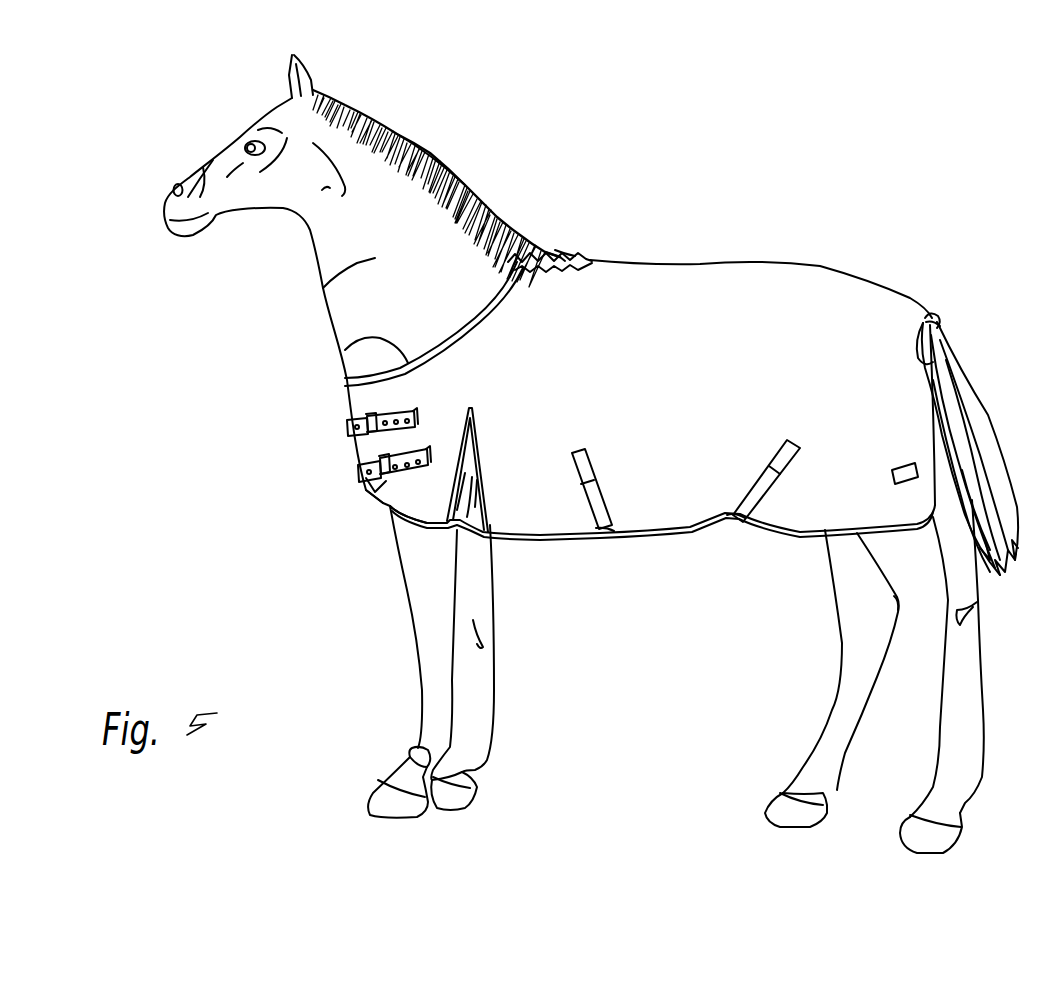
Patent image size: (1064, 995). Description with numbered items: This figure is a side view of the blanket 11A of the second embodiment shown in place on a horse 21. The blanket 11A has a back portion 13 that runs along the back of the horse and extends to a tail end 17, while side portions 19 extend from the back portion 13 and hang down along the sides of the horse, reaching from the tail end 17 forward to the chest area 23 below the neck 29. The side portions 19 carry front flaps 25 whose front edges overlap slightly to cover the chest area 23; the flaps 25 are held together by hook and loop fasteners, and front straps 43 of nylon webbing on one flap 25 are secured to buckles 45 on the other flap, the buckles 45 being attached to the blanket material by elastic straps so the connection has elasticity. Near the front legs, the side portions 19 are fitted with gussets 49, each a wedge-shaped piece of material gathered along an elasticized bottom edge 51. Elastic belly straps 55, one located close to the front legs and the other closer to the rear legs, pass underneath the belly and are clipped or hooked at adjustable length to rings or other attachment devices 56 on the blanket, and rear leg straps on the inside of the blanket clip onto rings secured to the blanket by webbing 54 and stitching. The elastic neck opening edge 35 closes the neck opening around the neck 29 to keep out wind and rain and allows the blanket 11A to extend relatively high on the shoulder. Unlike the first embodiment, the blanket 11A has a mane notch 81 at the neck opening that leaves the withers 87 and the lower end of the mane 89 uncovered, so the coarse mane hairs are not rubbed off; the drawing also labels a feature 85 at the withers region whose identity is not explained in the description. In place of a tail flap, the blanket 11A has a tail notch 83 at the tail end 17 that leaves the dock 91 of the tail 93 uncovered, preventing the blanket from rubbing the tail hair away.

The blanket 11A is at (611, 370).
The back portion 13 is at (748, 258).
The tail end 17 is at (923, 302).
The side portions 19 is at (793, 500).
The horse 21 is at (417, 141).
The chest area 23 is at (373, 403).
The front flaps 25 is at (377, 447).
The neck 29 is at (327, 283).
The neck opening edge 35 is at (347, 352).
The front straps 43 is at (345, 423).
The buckles 45 is at (387, 487).
The gussets 49 is at (473, 488).
The bottom edge 51 is at (467, 530).
The webbing 54 is at (901, 464).
The belly straps 55 is at (615, 540).
The attachment devices 56 is at (587, 470).
The mane notch 81 is at (563, 253).
The tail notch 83 is at (990, 416).
The withers fringe 85 is at (587, 253).
The withers 87 is at (545, 250).
The mane 89 is at (453, 173).
The dock 91 is at (938, 333).
The tail 93 is at (977, 423).